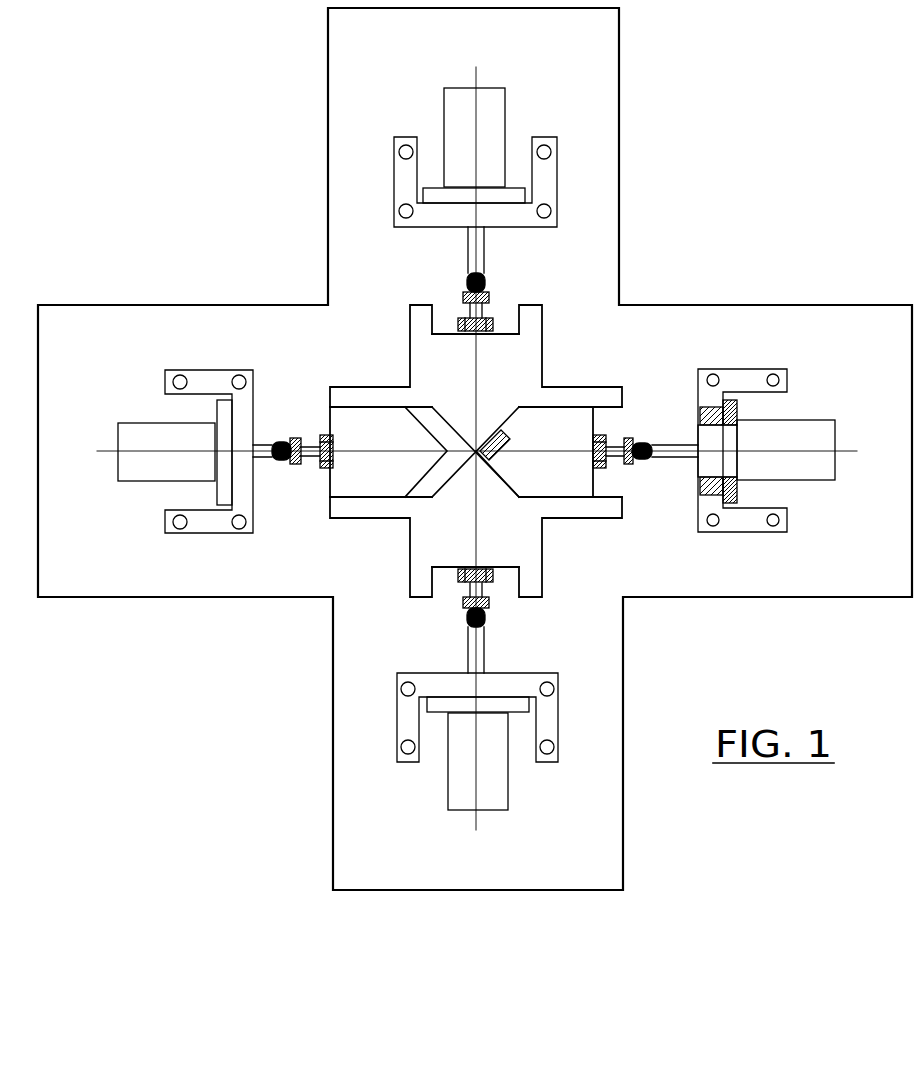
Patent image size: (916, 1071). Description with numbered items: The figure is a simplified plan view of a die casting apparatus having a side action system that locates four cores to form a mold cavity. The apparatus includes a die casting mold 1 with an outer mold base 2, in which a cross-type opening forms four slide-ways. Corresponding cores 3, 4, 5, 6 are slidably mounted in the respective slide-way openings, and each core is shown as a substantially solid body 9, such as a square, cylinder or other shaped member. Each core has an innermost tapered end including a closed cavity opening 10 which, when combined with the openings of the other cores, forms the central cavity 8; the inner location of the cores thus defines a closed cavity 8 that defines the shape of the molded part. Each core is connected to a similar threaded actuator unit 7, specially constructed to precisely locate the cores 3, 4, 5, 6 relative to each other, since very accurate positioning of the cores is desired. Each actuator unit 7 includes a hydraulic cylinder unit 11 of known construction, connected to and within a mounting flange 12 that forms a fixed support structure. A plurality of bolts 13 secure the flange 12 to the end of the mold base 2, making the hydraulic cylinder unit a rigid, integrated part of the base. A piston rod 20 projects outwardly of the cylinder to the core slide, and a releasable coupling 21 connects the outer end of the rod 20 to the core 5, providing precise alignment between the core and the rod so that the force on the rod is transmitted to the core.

The die casting mold 1 is at (312, 683).
The outer mold base 2 is at (572, 383).
The core 3 is at (404, 452).
The core 4 is at (475, 361).
The core 5 is at (556, 426).
The core 6 is at (475, 539).
The threaded actuator unit 7 is at (392, 243).
The cavity 8 is at (500, 458).
The solid body 9 is at (556, 492).
The closed cavity opening 10 is at (479, 458).
The hydraulic cylinder unit 11 is at (803, 473).
The mounting flange 12 is at (730, 375).
The bolts 13 is at (773, 374).
The piston rod 20 is at (692, 455).
The releasable coupling 21 is at (627, 438).